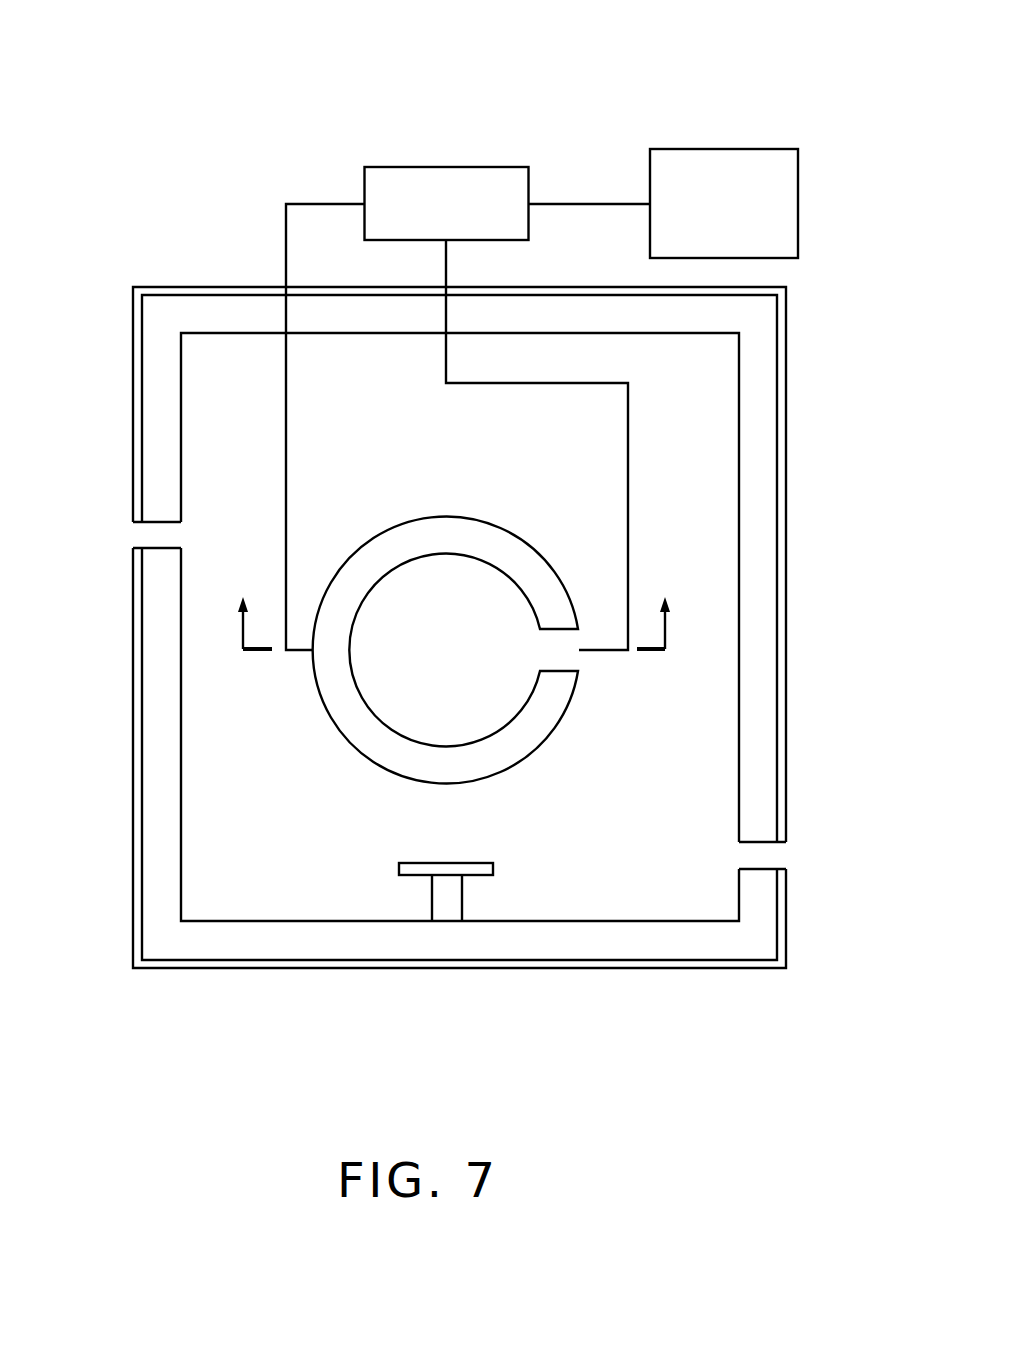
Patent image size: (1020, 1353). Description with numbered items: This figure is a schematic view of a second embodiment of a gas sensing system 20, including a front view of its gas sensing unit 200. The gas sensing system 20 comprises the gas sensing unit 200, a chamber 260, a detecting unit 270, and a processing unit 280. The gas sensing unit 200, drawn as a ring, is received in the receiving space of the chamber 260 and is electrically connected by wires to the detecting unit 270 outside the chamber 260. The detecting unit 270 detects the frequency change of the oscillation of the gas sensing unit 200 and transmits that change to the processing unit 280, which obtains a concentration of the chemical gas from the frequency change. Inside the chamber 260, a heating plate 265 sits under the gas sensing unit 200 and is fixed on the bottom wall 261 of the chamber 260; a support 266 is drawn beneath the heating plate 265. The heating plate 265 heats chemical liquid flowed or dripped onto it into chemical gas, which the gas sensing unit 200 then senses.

The gas sensing system 20 is at (359, 68).
The gas sensing unit 200 is at (547, 766).
The chamber 260 is at (759, 349).
The bottom wall 261 is at (210, 942).
The heating plate 265 is at (408, 871).
The support column 266 is at (453, 902).
The detecting unit 270 is at (428, 193).
The processing unit 280 is at (724, 168).